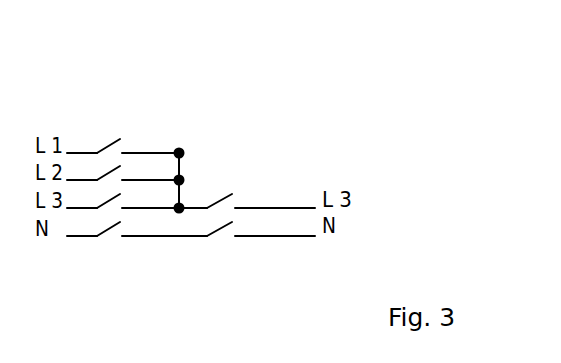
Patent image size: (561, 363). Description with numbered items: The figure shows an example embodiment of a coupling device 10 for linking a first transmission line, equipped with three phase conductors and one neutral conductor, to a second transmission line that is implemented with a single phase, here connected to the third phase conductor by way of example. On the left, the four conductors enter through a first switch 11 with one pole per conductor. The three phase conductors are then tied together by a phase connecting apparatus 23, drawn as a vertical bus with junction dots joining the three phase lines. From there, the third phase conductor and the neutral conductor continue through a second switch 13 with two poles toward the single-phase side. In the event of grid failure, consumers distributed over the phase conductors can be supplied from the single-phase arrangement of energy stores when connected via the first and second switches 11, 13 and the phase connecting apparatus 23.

The coupling device 10 is at (340, 66).
The first switch 11 is at (113, 125).
The second switch 13 is at (237, 188).
The phase connecting apparatus 23 is at (185, 143).